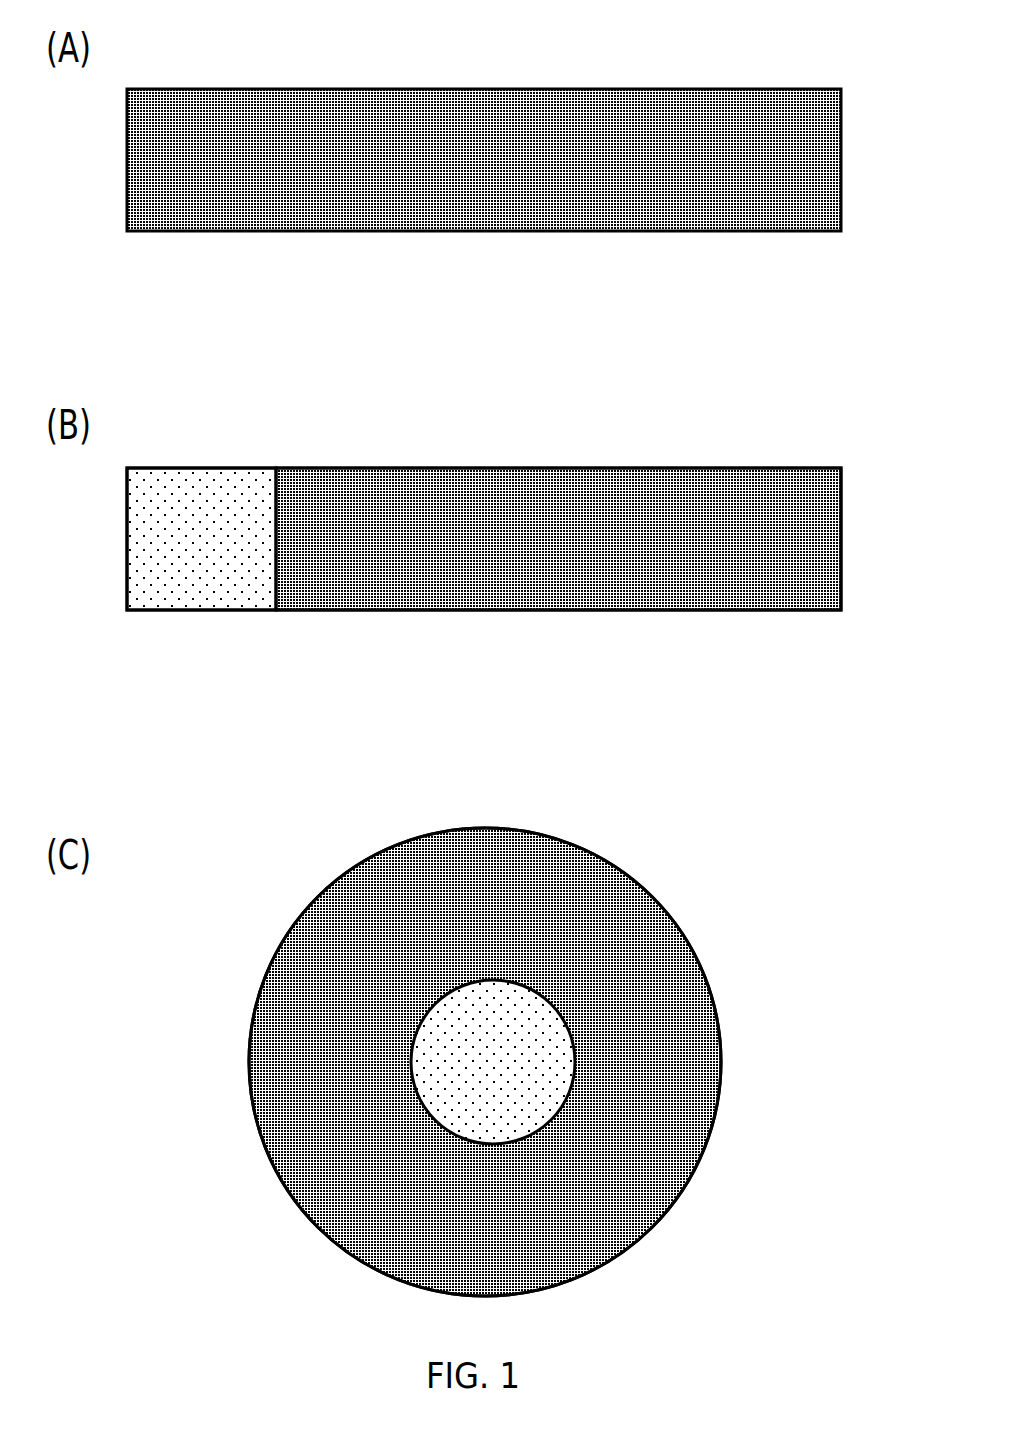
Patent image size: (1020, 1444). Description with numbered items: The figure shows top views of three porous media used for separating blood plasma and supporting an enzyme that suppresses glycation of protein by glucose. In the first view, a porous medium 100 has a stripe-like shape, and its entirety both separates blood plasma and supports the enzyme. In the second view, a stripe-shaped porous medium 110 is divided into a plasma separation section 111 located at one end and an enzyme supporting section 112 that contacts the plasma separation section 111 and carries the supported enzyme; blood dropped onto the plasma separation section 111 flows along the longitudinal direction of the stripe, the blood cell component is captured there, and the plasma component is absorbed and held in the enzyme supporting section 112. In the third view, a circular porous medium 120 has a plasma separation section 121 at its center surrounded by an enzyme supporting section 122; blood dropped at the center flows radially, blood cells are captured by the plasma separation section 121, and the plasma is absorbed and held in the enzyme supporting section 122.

The porous medium 100 is at (783, 70).
The porous medium 110 is at (782, 438).
The plasma separation section 111 is at (202, 460).
The enzyme supporting section 112 is at (412, 460).
The porous medium 120 is at (762, 817).
The plasma separation section 121 is at (540, 1015).
The enzyme supporting section 122 is at (575, 840).